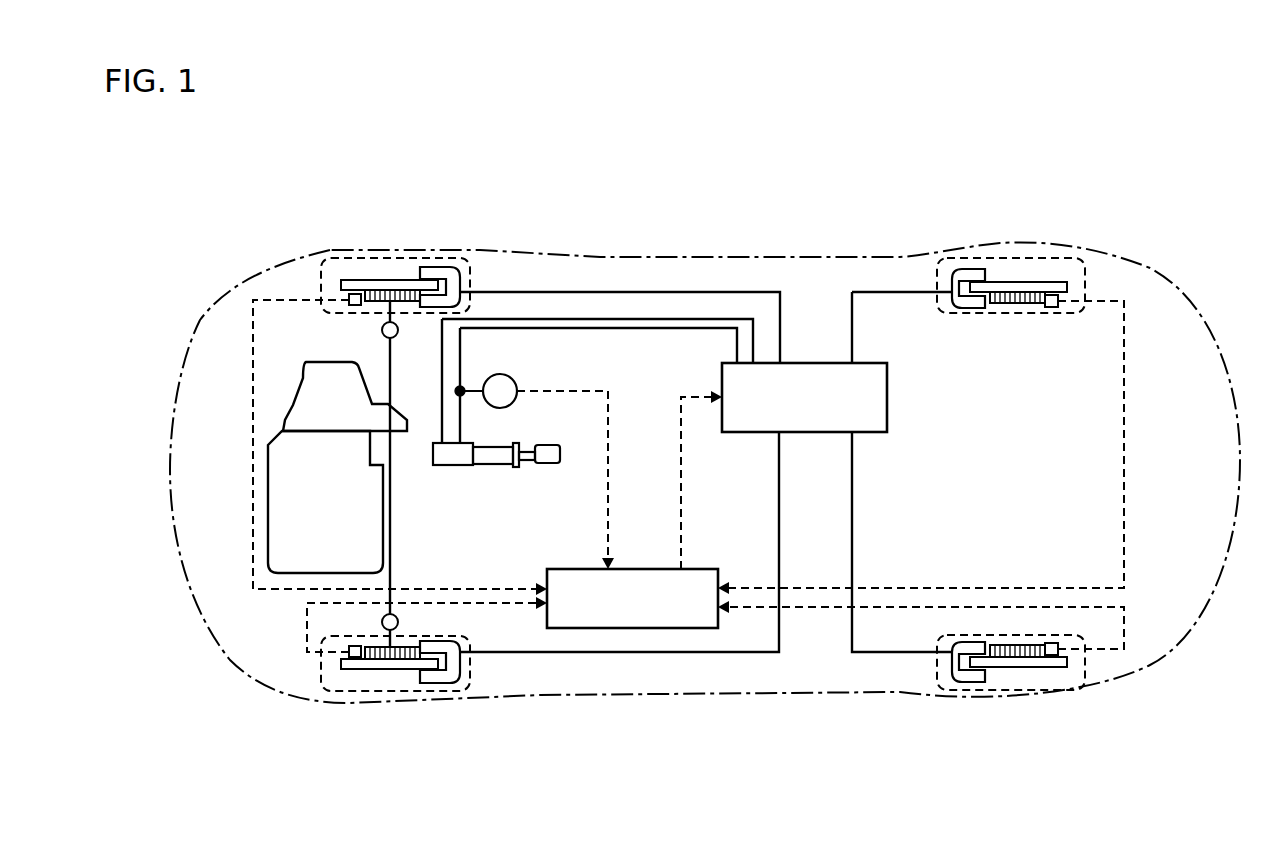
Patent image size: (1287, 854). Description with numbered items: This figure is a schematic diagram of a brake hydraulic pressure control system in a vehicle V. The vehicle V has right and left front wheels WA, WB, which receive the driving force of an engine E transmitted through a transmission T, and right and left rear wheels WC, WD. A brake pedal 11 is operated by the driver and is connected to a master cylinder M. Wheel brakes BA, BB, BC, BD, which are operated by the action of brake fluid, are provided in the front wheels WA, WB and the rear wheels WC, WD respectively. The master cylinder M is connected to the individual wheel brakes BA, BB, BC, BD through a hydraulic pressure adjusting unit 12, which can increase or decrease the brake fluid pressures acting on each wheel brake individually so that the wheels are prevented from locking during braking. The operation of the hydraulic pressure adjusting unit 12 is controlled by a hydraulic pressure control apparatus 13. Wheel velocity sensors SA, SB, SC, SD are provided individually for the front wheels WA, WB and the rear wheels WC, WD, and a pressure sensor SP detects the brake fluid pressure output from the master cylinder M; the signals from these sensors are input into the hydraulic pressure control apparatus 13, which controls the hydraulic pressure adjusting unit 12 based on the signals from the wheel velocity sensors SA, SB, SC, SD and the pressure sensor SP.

The vehicle V is at (634, 238).
The front wheel WA is at (366, 697).
The front wheel WB is at (366, 256).
The rear wheel WC is at (1000, 695).
The rear wheel WD is at (1000, 258).
The wheel brake BA is at (445, 681).
The wheel brake BB is at (437, 268).
The wheel brake BC is at (962, 683).
The wheel brake BD is at (950, 268).
The wheel velocity sensor SA is at (349, 652).
The wheel velocity sensor SB is at (349, 300).
The wheel velocity sensor SC is at (1052, 656).
The wheel velocity sensor SD is at (1050, 308).
The pressure sensor SP is at (510, 386).
The master cylinder M is at (448, 460).
The brake pedal 11 is at (547, 458).
The hydraulic pressure adjusting unit 12 is at (872, 433).
The hydraulic pressure control apparatus 13 is at (698, 569).
The transmission T is at (341, 412).
The engine E is at (327, 523).